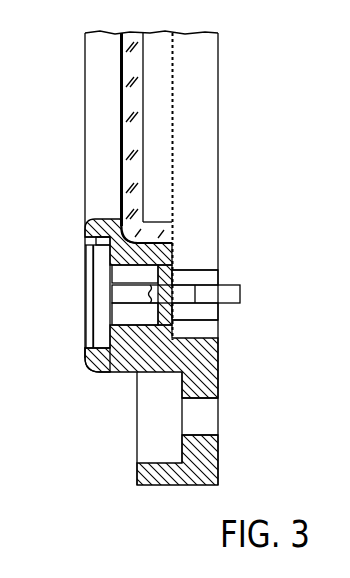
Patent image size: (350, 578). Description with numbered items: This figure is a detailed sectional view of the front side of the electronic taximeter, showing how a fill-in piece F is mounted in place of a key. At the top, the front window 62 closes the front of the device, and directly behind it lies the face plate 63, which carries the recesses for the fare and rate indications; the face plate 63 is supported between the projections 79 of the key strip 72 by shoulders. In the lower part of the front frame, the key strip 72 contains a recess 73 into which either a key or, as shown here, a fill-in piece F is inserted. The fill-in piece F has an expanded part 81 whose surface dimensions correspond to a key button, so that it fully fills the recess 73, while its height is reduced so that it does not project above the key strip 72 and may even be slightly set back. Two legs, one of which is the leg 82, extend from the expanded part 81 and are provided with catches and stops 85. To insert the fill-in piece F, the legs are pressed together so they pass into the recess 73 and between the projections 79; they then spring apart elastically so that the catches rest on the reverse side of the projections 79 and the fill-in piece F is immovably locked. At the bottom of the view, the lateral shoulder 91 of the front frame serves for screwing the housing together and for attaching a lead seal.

The front window 62 is at (121, 63).
The face plate 63 is at (173, 60).
The recess 73 is at (90, 236).
The expanded part 81 is at (88, 273).
The fill-in piece F is at (62, 334).
The key strip 72 is at (78, 367).
The stop 85 is at (181, 288).
The leg 82 is at (228, 290).
The guide 79 is at (205, 312).
The lateral shoulder 91 is at (160, 480).